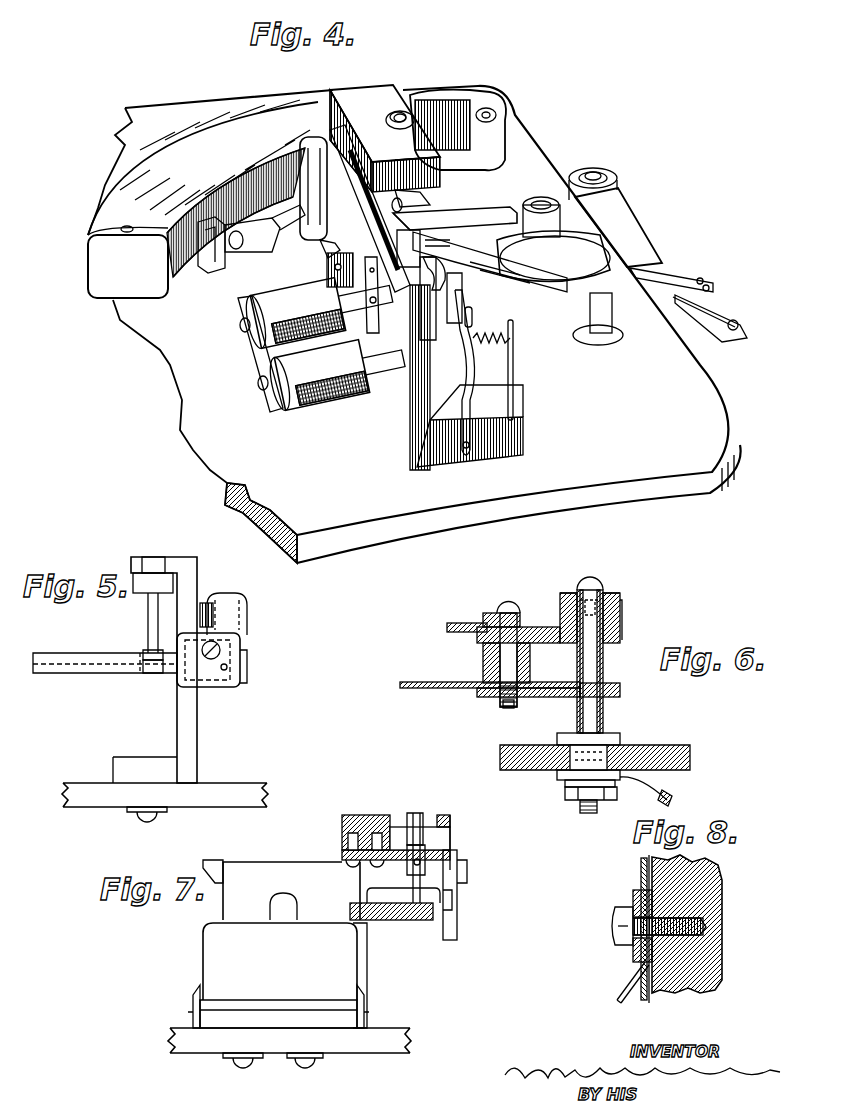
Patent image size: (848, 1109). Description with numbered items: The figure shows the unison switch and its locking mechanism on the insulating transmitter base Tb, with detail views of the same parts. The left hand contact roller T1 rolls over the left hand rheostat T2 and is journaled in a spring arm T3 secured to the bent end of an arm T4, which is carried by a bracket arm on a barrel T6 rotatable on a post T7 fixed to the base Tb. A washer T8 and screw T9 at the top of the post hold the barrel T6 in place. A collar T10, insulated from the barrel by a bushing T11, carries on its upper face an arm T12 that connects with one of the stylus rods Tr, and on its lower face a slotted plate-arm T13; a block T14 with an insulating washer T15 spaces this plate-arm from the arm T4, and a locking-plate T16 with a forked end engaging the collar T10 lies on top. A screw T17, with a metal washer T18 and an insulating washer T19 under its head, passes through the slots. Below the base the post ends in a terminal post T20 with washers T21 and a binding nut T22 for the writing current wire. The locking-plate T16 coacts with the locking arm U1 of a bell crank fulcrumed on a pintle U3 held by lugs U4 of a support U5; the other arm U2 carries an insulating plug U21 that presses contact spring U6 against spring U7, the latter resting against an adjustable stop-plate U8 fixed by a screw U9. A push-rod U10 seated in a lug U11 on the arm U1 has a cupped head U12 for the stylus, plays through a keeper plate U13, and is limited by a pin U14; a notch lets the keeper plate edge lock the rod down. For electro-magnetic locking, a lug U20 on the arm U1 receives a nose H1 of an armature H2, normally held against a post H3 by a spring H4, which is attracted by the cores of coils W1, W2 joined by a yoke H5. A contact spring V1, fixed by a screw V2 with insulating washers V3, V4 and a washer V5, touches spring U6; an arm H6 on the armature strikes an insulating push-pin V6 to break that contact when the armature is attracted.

In FIG. 4, the transmitter base Tb is at (414, 324).
In FIG. 5, the transmitter base Tb is at (268, 768).
In FIG. 6, the transmitter base Tb is at (690, 760).
In FIG. 7, the transmitter base Tb is at (403, 1028).
In FIG. 4, the left hand contact roller T1 is at (215, 182).
In FIG. 4, the left hand rheostat T2 is at (128, 262).
In FIG. 4, the spring arm T3 is at (205, 262).
In FIG. 4, the arm T4 is at (253, 245).
In FIG. 6, the arm T4 is at (465, 688).
In FIG. 6, the barrel T6 is at (603, 718).
In FIG. 6, the post T7 is at (590, 668).
In FIG. 6, the washer T8 is at (604, 598).
In FIG. 6, the screw T9 is at (592, 580).
In FIG. 6, the collar T10 is at (622, 620).
In FIG. 6, the bushing T11 is at (567, 593).
In FIG. 4, the arm T12 is at (636, 228).
In FIG. 6, the arm T12 is at (621, 600).
In FIG. 6, the plate-arm T13 is at (483, 650).
In FIG. 6, the block T14 is at (525, 660).
In FIG. 4, the washer T15 is at (570, 290).
In FIG. 6, the washer T15 is at (483, 670).
In FIG. 4, the locking-plate T16 is at (553, 256).
In FIG. 6, the locking-plate T16 is at (460, 618).
In FIG. 6, the screw T17 is at (506, 708).
In FIG. 6, the metal washer T18 is at (490, 613).
In FIG. 6, the insulating washer T19 is at (522, 620).
In FIG. 6, the terminal post T20 is at (580, 806).
In FIG. 6, the washers T21 is at (557, 775).
In FIG. 6, the binding nut T22 is at (565, 785).
In FIG. 4, the rods Tr is at (705, 305).
In FIG. 4, the locking arm U1 is at (476, 215).
In FIG. 5, the locking arm U1 is at (90, 640).
In FIG. 4, the bell crank arm U2 is at (315, 195).
In FIG. 5, the bell crank arm U2 is at (243, 623).
In FIG. 4, the pintle U3 is at (320, 250).
In FIG. 5, the pintle U3 is at (227, 670).
In FIG. 4, the lugs U4 is at (330, 270).
In FIG. 5, the lugs U4 is at (242, 662).
In FIG. 4, the support U5 is at (413, 403).
In FIG. 5, the support U5 is at (198, 745).
In FIG. 7, the support U5 is at (278, 976).
In FIG. 8, the support U5 is at (718, 877).
In FIG. 4, the contact spring U6 is at (370, 207).
In FIG. 5, the contact spring U6 is at (207, 603).
In FIG. 4, the contact spring U7 is at (385, 138).
In FIG. 4, the adjustable stop-plate U8 is at (417, 149).
In FIG. 5, the adjustable stop-plate U8 is at (245, 605).
In FIG. 5, the screw U9 is at (205, 655).
In FIG. 5, the push-rod U10 is at (138, 650).
In FIG. 7, the push-rod U10 is at (410, 872).
In FIG. 4, the lug U11 is at (410, 210).
In FIG. 5, the lug U11 is at (140, 672).
In FIG. 7, the lug U11 is at (428, 920).
In FIG. 4, the enlarged head U12 is at (401, 120).
In FIG. 5, the enlarged head U12 is at (152, 557).
In FIG. 7, the enlarged head U12 is at (417, 818).
In FIG. 7, the keeper plate U13 is at (358, 862).
In FIG. 7, the pin U14 is at (457, 870).
In FIG. 4, the lug U20 is at (490, 260).
In FIG. 7, the lug U20 is at (380, 921).
In FIG. 4, the plug of insulating material U21 is at (299, 238).
In FIG. 4, the nose H1 is at (476, 297).
In FIG. 7, the nose H1 is at (355, 927).
In FIG. 4, the armature H2 is at (470, 378).
In FIG. 7, the armature H2 is at (205, 957).
In FIG. 4, the vertical post H3 is at (475, 325).
In FIG. 4, the spring H4 is at (513, 345).
In FIG. 4, the yoke H5 is at (253, 363).
In FIG. 4, the arm H6 is at (463, 280).
In FIG. 7, the arm H6 is at (275, 893).
In FIG. 4, the coil W1 is at (320, 308).
In FIG. 4, the coil W2 is at (338, 371).
In FIG. 4, the contact spring V1 is at (394, 307).
In FIG. 8, the contact spring V1 is at (641, 877).
In FIG. 8, the screw V2 is at (607, 915).
In FIG. 8, the insulating washer V3 is at (666, 938).
In FIG. 8, the insulating washer V4 is at (640, 958).
In FIG. 8, the washer V5 is at (633, 905).
In FIG. 4, the push-pin V6 is at (438, 300).